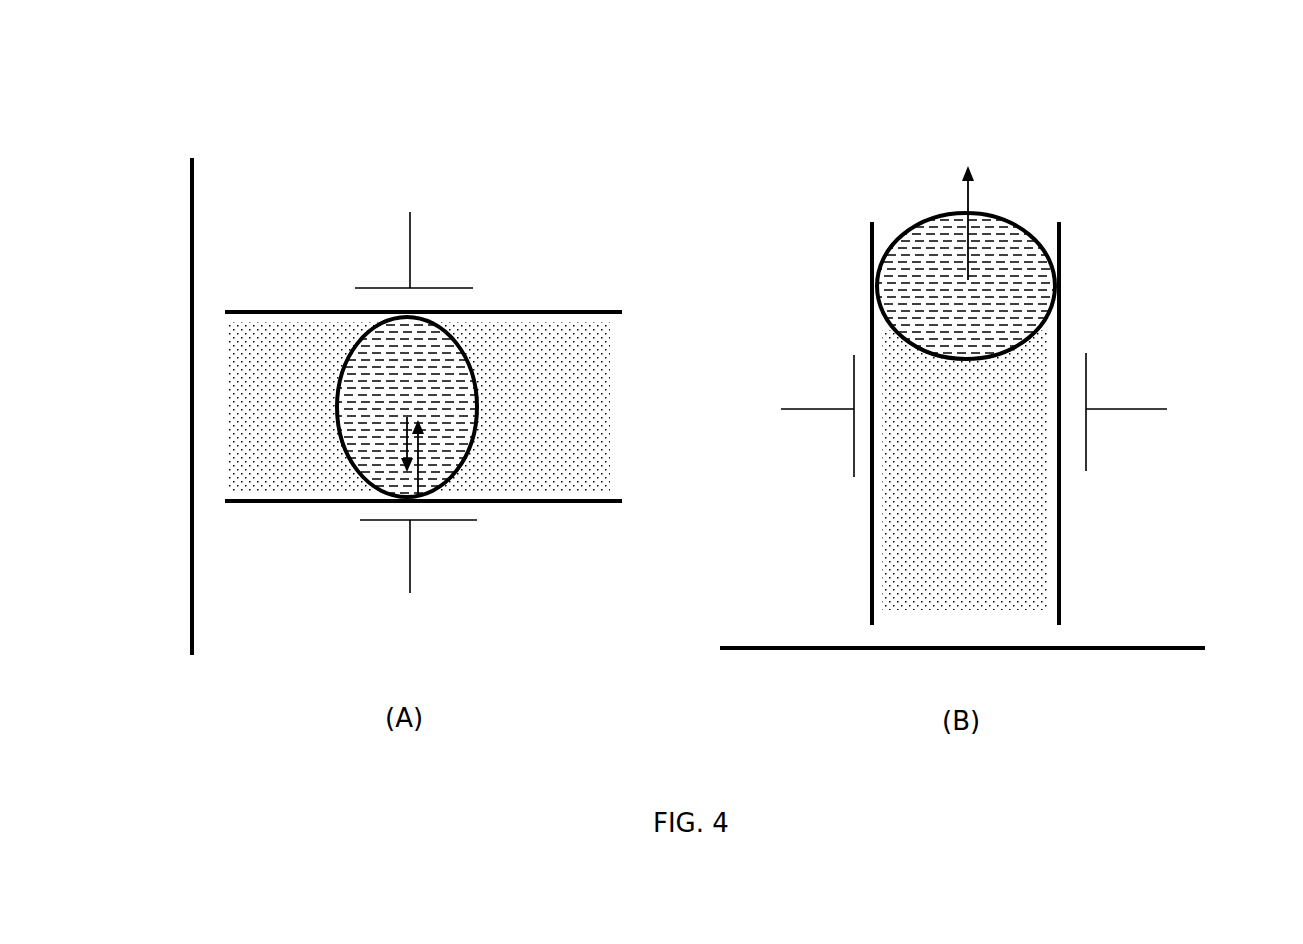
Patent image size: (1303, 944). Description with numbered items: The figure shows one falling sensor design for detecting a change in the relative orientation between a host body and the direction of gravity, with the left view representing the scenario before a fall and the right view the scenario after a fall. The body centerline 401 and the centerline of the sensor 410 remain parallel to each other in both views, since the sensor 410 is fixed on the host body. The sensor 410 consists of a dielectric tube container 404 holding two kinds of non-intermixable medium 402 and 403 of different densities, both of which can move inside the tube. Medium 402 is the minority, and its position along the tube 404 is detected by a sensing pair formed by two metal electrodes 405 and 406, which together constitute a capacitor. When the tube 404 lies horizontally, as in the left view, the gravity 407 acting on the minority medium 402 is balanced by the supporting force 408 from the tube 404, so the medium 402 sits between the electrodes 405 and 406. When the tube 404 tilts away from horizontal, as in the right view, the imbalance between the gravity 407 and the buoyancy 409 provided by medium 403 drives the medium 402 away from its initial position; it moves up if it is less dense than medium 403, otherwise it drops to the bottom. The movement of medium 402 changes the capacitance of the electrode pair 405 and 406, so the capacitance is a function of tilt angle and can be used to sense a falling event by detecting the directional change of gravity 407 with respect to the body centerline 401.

The body centerline 401 is at (195, 192).
The minority medium 402 is at (413, 370).
The second medium 403 is at (528, 457).
The dielectric tube container 404 is at (320, 315).
The metal electrode 405 is at (412, 223).
The metal electrode 406 is at (412, 533).
The gravity 407 is at (407, 437).
The supporting force 408 is at (418, 455).
The buoyancy 409 is at (970, 198).
The sensor 410 is at (335, 250).